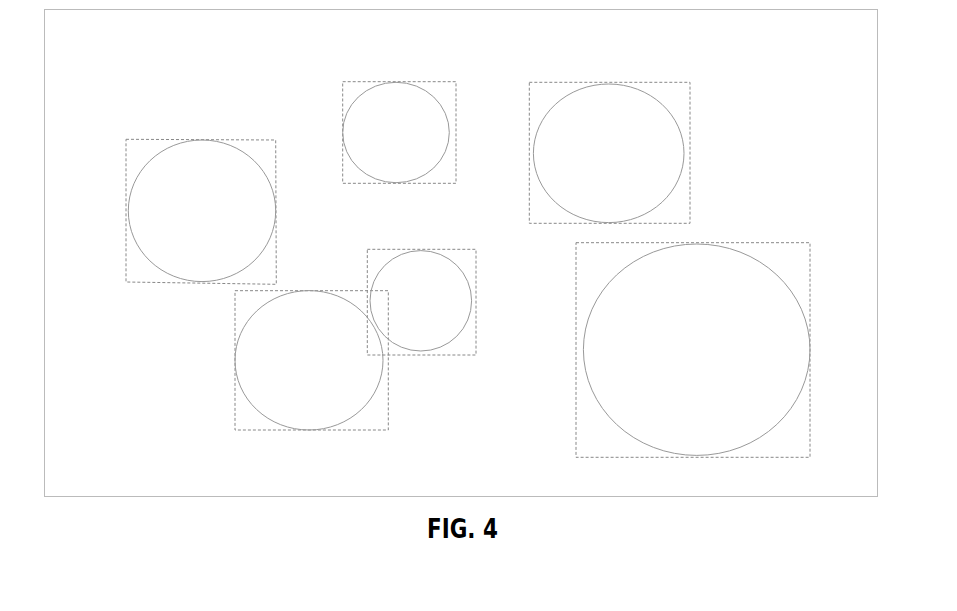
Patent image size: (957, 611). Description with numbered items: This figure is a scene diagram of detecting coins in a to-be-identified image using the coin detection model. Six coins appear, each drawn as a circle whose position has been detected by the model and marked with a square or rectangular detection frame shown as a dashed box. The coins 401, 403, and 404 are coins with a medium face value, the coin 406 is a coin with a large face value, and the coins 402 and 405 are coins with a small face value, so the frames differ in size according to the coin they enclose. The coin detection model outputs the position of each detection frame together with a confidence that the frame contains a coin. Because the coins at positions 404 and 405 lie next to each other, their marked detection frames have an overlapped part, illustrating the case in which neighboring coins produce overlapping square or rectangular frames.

The coin with a medium face value 401 is at (200, 139).
The coin with a small face value 402 is at (395, 82).
The coin with a medium face value 403 is at (607, 83).
The coin with a medium face value 404 is at (282, 289).
The coin with a small face value 405 is at (420, 250).
The coin with a large face value 406 is at (713, 243).